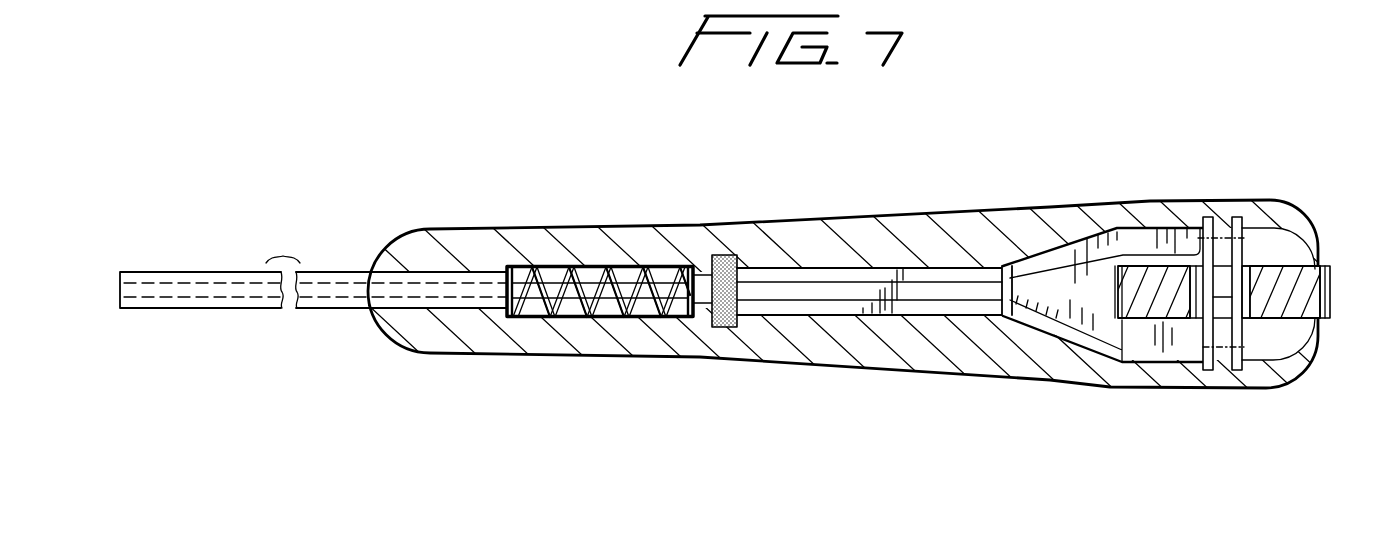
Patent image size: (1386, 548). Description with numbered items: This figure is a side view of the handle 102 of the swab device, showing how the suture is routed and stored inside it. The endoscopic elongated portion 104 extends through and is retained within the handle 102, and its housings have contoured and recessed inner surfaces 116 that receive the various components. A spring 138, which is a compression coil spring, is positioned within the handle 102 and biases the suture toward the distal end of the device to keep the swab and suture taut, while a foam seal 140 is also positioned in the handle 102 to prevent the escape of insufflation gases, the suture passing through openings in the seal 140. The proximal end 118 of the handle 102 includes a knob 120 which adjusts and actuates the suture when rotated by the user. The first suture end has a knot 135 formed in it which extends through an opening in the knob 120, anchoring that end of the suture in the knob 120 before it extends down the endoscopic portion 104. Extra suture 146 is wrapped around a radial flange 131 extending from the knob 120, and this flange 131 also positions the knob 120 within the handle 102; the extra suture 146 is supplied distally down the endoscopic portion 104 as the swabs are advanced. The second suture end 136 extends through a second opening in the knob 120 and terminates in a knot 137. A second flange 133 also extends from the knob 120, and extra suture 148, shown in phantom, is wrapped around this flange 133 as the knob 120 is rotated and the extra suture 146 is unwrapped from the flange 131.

The handle 102 is at (903, 218).
The endoscopic elongated portion 104 is at (183, 280).
The inner surfaces 116 is at (1062, 252).
The proximal end 118 is at (1285, 222).
The knob 120 is at (1146, 280).
The radial flange 131 is at (1237, 371).
The second flange 133 is at (1194, 252).
The knot 135 is at (1254, 263).
The second suture end 136 is at (1184, 332).
The knot 137 is at (1197, 321).
The spring 138 is at (590, 273).
The foam seal 140 is at (723, 256).
The extra suture 146 is at (1221, 370).
The extra suture 148 is at (1199, 239).